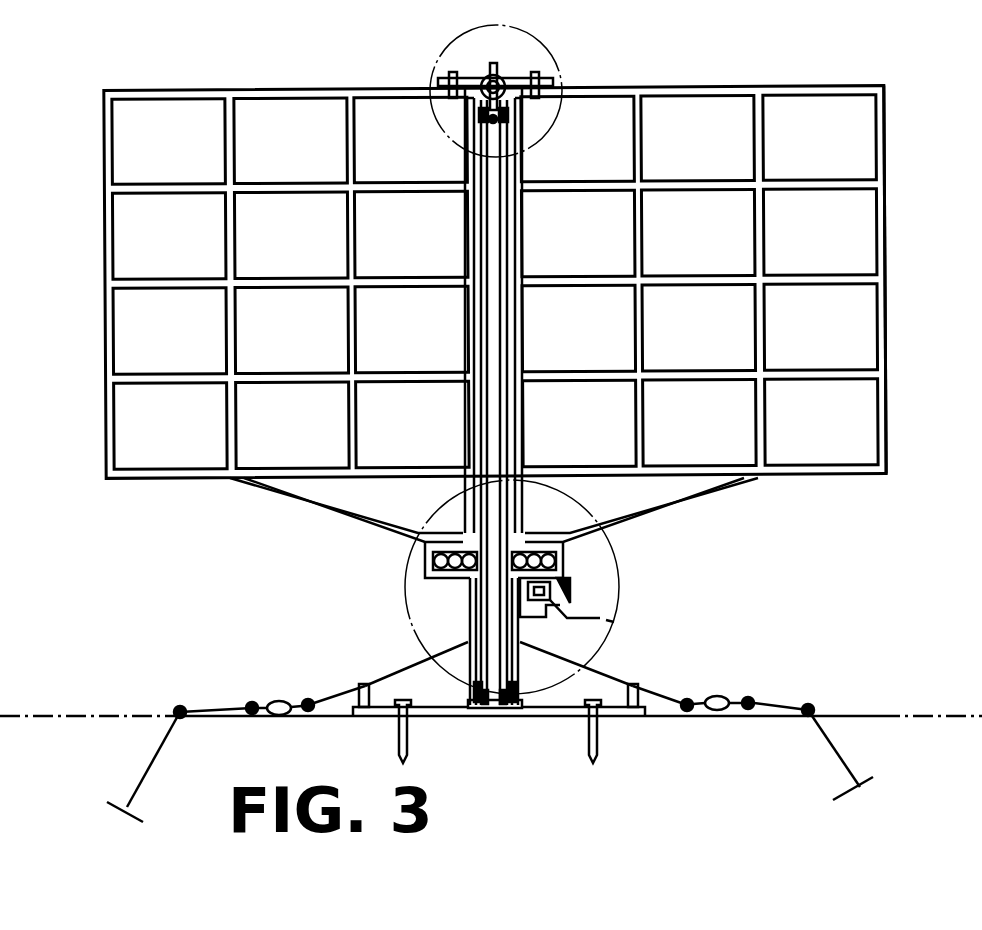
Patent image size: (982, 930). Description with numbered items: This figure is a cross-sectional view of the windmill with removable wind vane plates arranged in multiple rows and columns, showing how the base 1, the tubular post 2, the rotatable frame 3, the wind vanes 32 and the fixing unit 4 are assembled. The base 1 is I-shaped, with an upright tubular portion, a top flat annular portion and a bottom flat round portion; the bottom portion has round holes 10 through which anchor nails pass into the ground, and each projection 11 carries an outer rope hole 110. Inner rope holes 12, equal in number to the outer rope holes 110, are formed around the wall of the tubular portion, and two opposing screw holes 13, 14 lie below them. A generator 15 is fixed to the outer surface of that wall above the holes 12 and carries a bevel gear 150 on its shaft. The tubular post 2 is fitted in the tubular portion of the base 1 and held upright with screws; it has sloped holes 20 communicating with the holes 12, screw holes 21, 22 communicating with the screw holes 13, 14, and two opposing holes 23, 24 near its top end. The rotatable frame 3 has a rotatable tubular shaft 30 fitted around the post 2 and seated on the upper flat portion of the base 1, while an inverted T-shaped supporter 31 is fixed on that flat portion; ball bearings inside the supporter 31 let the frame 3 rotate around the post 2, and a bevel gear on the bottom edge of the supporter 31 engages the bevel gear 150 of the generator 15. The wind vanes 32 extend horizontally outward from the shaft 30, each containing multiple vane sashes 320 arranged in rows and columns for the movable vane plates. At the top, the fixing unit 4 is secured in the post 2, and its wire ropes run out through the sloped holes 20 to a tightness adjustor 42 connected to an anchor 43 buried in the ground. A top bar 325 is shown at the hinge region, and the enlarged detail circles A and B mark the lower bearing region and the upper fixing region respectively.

The base 1 is at (558, 717).
The tubular post 2 is at (486, 318).
The rotatable frame 3 is at (835, 495).
The fixing unit 4 is at (514, 66).
The round holes 10 is at (600, 718).
The projection 11 is at (388, 673).
The inner rope holes 12 is at (516, 636).
The screw hole 13 is at (513, 706).
The screw hole 14 is at (478, 706).
The generator 15 is at (528, 592).
The sloped holes 20 is at (600, 630).
The screw hole 21 is at (501, 706).
The screw hole 22 is at (487, 706).
The hole 23 is at (508, 115).
The hole 24 is at (478, 115).
The rotatable tubular shaft 30 is at (466, 230).
The inverted T-shaped supporter 31 is at (562, 556).
The wind vanes 32 is at (886, 237).
The tightness adjustor 42 is at (720, 690).
The anchor 43 is at (826, 753).
The outer rope hole 110 is at (219, 735).
The bevel gear 150 is at (566, 592).
The vane sashes 320 is at (830, 105).
The hinge bar 325 is at (450, 90).
The detail circle A is at (406, 566).
The detail circle B is at (560, 50).